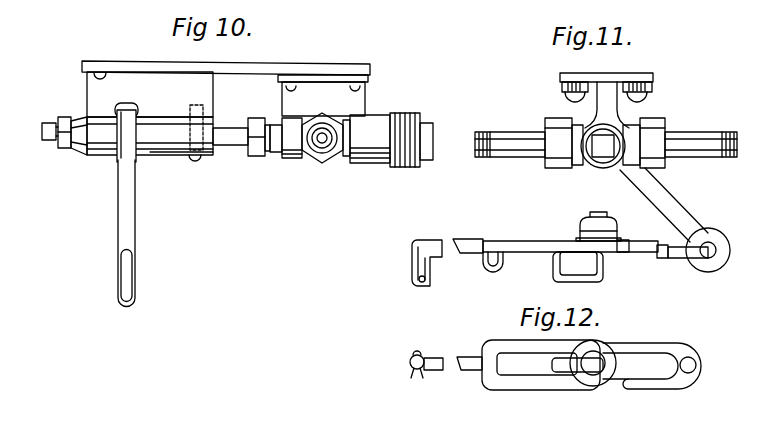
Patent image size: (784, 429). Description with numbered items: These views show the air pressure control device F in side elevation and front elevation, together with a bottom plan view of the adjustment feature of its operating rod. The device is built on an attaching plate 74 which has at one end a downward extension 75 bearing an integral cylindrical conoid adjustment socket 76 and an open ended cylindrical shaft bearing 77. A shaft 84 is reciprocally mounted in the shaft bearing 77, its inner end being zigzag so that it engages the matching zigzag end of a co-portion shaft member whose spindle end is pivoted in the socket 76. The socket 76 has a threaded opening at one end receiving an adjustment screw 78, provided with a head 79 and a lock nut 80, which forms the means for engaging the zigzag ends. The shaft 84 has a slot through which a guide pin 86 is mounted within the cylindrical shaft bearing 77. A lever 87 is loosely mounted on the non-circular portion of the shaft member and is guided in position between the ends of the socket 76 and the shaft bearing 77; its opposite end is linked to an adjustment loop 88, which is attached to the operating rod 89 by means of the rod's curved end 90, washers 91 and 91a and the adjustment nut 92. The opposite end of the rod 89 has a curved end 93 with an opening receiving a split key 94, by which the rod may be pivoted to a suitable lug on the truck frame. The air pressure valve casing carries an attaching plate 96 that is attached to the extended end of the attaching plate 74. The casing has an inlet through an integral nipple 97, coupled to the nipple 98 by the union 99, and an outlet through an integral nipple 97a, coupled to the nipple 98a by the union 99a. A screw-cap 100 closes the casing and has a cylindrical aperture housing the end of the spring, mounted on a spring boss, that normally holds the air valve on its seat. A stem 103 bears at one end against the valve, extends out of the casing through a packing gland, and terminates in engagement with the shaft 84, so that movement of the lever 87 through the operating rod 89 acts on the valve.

In FIG. 10, the attaching plate 74 is at (110, 62).
In FIG. 11, the attaching plate 74 is at (560, 75).
In FIG. 10, the downward extension 75 is at (87, 80).
In FIG. 11, the downward extension 75 is at (597, 105).
In FIG. 10, the cylindrical conoid adjustment socket 76 is at (101, 156).
In FIG. 10, the cylindrical shaft bearing 77 is at (170, 156).
In FIG. 10, the adjustment screw 78 is at (60, 126).
In FIG. 10, the head 79 is at (46, 131).
In FIG. 11, the head 79 is at (592, 160).
In FIG. 10, the lock nut 80 is at (73, 123).
In FIG. 11, the lock nut 80 is at (603, 168).
In FIG. 10, the shaft 84 is at (249, 126).
In FIG. 10, the guide pin 86 is at (195, 160).
In FIG. 10, the lever 87 is at (118, 225).
In FIG. 11, the lever 87 is at (672, 206).
In FIG. 11, the adjustment loop 88 is at (673, 262).
In FIG. 12, the adjustment loop 88 is at (672, 392).
In FIG. 11, the operating rod 89 is at (462, 254).
In FIG. 12, the operating rod 89 is at (468, 372).
In FIG. 11, the curved end 90 is at (558, 277).
In FIG. 12, the curved end 90 is at (575, 391).
In FIG. 11, the washer 91 is at (612, 256).
In FIG. 12, the washer 91 is at (600, 387).
In FIG. 11, the washer 91a is at (636, 232).
In FIG. 11, the adjustment nut 92 is at (590, 226).
In FIG. 10, the curved end 93 is at (387, 165).
In FIG. 11, the curved end 93 is at (412, 259).
In FIG. 12, the curved end 93 is at (410, 362).
In FIG. 12, the split key 94 is at (413, 374).
In FIG. 10, the attaching plate 96 is at (368, 80).
In FIG. 11, the attaching plate 96 is at (653, 89).
In FIG. 11, the integral nipple 97 is at (576, 166).
In FIG. 11, the integral nipple 97a is at (637, 127).
In FIG. 11, the nipple 98 is at (480, 158).
In FIG. 10, the nipple 98a is at (328, 148).
In FIG. 11, the nipple 98a is at (728, 136).
In FIG. 11, the union 99 is at (548, 168).
In FIG. 10, the union 99a is at (313, 161).
In FIG. 11, the union 99a is at (668, 130).
In FIG. 10, the screw-cap 100 is at (434, 140).
In FIG. 10, the stem 103 is at (231, 146).